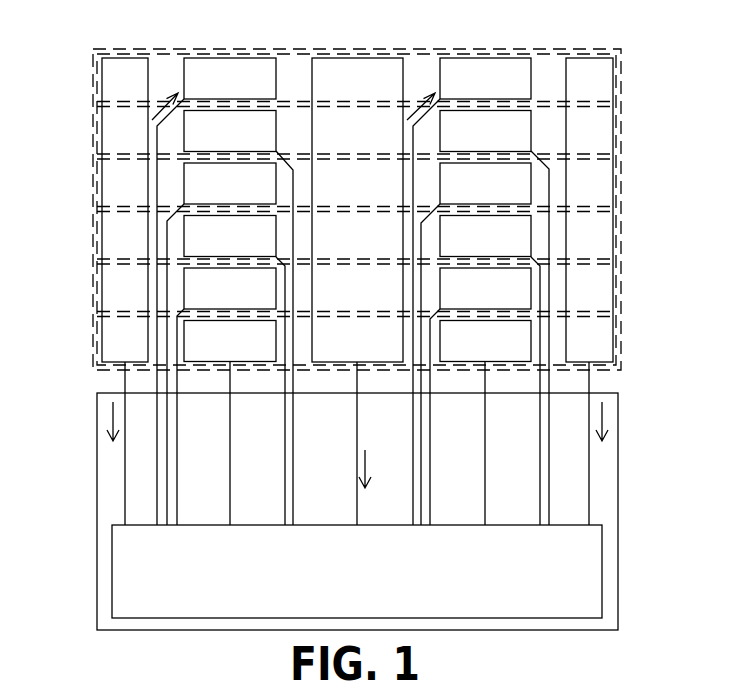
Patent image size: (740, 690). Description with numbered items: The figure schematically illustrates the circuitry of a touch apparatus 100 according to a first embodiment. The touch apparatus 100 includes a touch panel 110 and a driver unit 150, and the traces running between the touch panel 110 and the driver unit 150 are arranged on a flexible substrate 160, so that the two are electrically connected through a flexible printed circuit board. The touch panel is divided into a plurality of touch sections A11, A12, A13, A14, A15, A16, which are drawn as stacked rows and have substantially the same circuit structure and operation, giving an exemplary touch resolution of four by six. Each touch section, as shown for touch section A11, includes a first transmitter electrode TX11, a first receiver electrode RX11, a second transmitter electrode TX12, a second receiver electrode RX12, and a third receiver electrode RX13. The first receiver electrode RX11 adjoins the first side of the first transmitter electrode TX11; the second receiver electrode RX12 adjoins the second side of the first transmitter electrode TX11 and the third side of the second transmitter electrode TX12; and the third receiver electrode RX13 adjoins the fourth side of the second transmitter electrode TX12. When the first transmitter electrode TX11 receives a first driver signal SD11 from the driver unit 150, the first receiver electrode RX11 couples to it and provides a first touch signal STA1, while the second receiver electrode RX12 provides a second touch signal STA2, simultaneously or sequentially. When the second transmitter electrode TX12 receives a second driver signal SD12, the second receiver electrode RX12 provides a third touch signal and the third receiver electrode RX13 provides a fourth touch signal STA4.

The touch apparatus 100 is at (360, 326).
The touch panel 110 is at (92, 52).
The driver unit 150 is at (603, 598).
The flexible substrate 160 is at (618, 537).
The first receiver electrode RX11 is at (125, 57).
The second receiver electrode RX12 is at (358, 57).
The third receiver electrode RX13 is at (588, 57).
The first transmitter electrode TX11 is at (230, 210).
The second transmitter electrode TX12 is at (485, 210).
The first driver signal SD11 is at (161, 100).
The second driver signal SD12 is at (415, 100).
The touch section A11 is at (97, 78).
The touch section A12 is at (97, 130).
The touch section A13 is at (97, 183).
The touch section A14 is at (97, 236).
The touch section A15 is at (97, 288).
The touch section A16 is at (97, 340).
The first touch signal STA1 is at (97, 414).
The second touch signal STA2 is at (354, 453).
The fourth touch signal STA4 is at (610, 418).